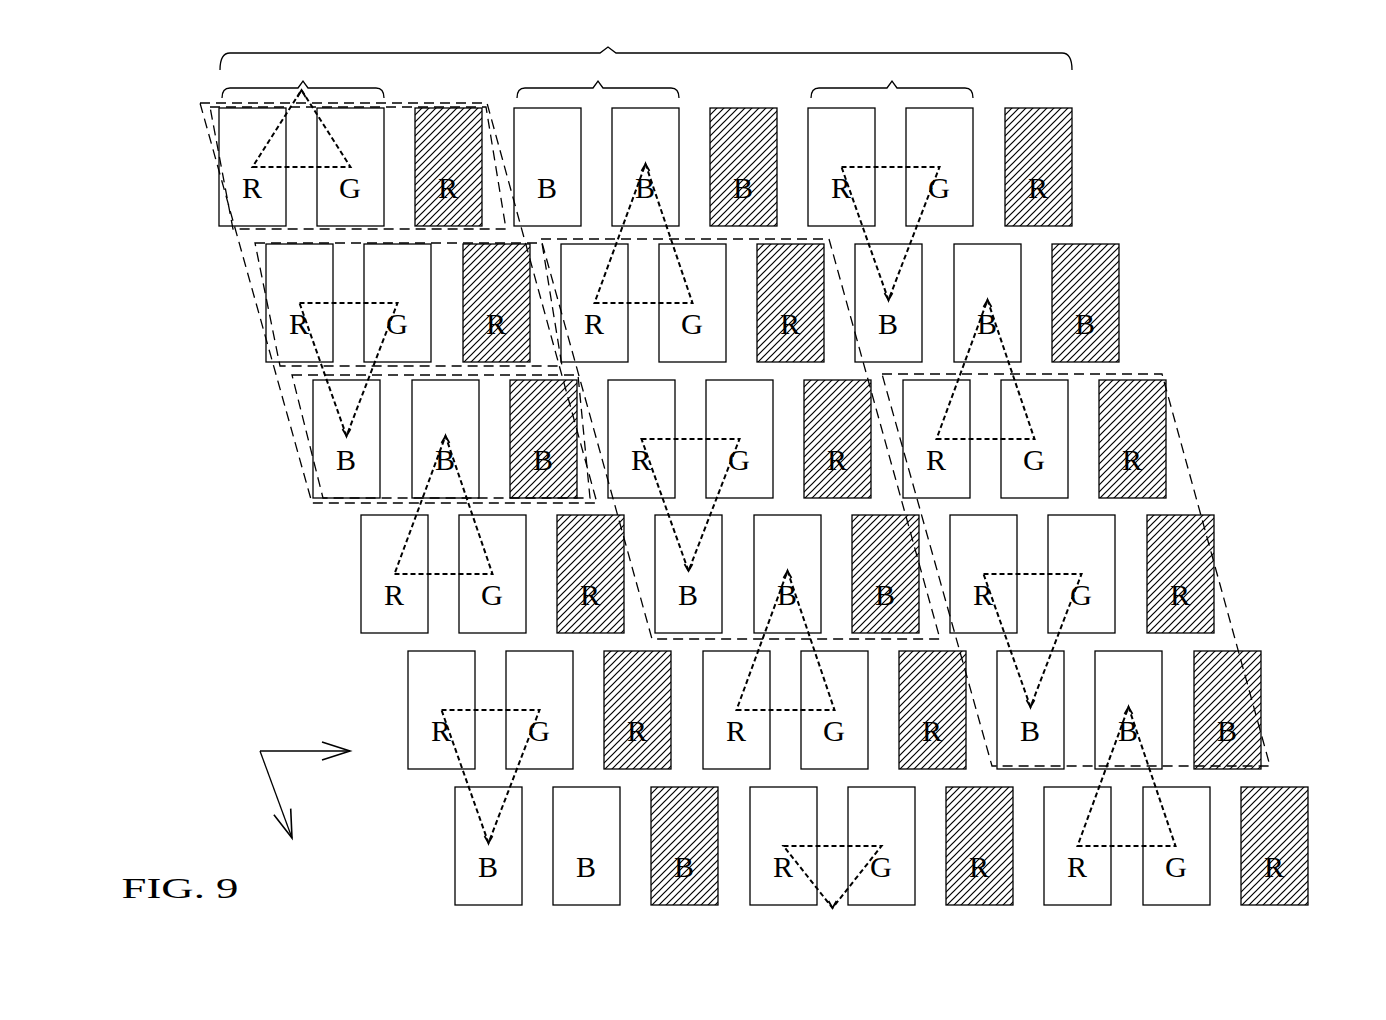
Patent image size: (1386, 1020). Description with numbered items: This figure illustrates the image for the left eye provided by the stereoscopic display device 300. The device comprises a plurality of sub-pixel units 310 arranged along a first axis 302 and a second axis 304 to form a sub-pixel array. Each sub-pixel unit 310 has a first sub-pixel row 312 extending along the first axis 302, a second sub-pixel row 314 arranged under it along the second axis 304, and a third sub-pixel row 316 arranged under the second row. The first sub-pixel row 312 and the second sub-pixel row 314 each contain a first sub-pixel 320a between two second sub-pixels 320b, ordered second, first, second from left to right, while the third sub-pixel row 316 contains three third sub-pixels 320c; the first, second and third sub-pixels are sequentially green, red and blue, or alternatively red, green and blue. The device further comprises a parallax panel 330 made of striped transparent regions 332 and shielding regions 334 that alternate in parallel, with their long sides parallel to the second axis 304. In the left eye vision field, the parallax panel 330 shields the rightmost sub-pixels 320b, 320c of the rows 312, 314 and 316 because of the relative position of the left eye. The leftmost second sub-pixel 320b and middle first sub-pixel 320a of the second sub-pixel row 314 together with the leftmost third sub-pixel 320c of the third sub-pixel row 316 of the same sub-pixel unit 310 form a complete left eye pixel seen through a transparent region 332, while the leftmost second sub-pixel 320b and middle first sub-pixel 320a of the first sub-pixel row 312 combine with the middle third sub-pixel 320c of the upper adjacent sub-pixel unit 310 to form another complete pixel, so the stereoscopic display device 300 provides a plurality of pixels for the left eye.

The stereoscopic display device 300 is at (1239, 118).
The first axis 302 is at (330, 751).
The second axis 304 is at (290, 813).
The sub-pixel unit 310 is at (1218, 576).
The first sub-pixel row 312 is at (214, 131).
The second sub-pixel row 314 is at (262, 265).
The third sub-pixel row 316 is at (300, 400).
The first sub-pixel 320a is at (763, 506).
The second sub-pixel 320b is at (763, 506).
The third sub-pixel 320c is at (787, 506).
The parallax panel 330 is at (646, 44).
The transparent region 332 is at (597, 74).
The shielding region 334 is at (449, 107).